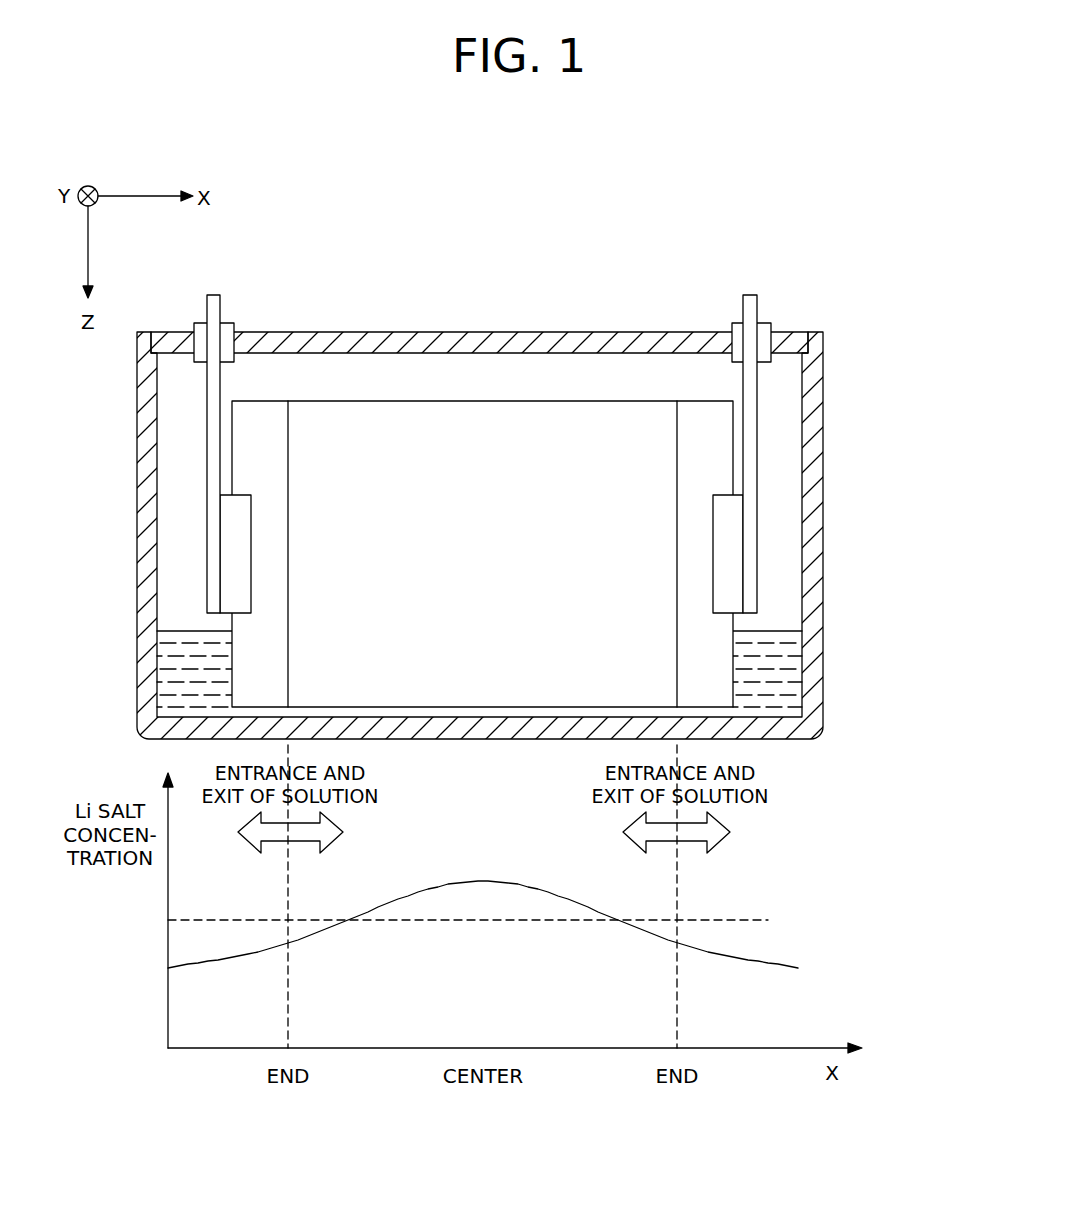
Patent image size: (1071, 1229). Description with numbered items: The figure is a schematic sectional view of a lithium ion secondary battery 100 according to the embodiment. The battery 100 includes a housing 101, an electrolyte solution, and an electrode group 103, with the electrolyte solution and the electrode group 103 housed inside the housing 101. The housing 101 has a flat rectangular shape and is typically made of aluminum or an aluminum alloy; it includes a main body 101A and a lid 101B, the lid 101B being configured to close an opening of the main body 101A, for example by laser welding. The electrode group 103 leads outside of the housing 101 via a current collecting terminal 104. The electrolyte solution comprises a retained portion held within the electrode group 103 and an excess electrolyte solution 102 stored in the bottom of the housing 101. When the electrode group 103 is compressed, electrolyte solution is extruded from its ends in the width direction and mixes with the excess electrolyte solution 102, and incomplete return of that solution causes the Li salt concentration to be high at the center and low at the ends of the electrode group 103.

The battery 100 is at (853, 218).
The housing 101 is at (559, 528).
The main body 101A is at (823, 388).
The lid 101B is at (790, 331).
The excess electrolyte solution 102 is at (770, 670).
The electrode group 103 is at (480, 525).
The current collecting terminal 104 is at (215, 295).